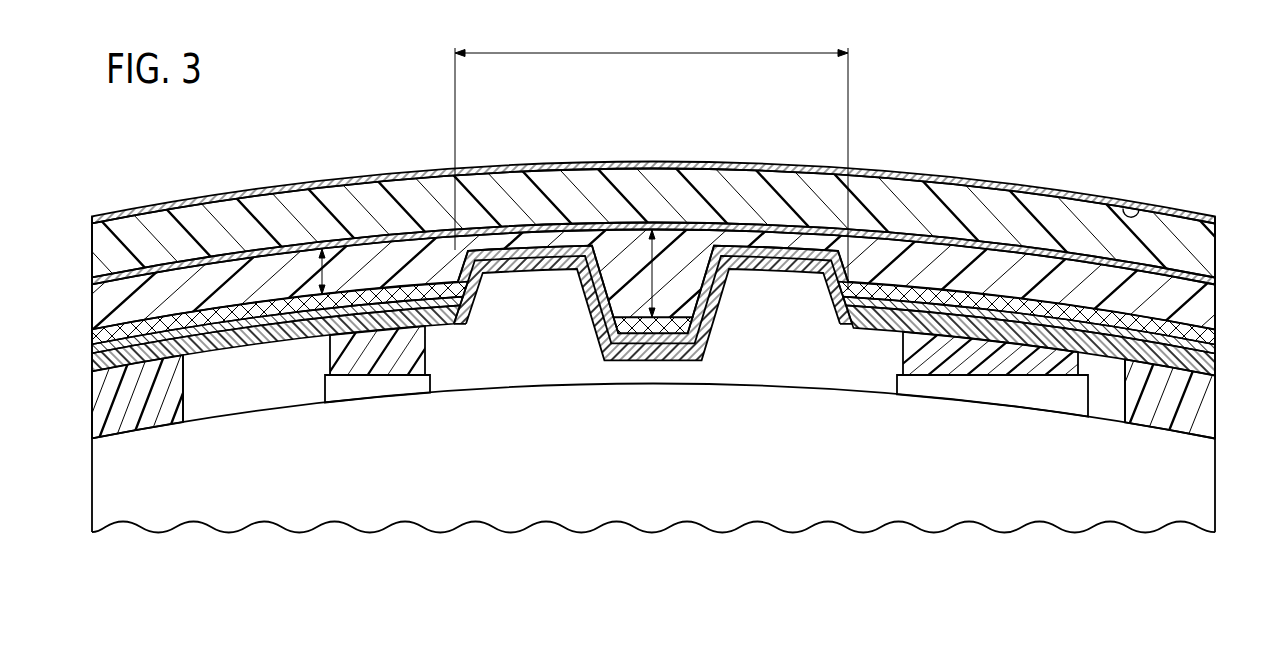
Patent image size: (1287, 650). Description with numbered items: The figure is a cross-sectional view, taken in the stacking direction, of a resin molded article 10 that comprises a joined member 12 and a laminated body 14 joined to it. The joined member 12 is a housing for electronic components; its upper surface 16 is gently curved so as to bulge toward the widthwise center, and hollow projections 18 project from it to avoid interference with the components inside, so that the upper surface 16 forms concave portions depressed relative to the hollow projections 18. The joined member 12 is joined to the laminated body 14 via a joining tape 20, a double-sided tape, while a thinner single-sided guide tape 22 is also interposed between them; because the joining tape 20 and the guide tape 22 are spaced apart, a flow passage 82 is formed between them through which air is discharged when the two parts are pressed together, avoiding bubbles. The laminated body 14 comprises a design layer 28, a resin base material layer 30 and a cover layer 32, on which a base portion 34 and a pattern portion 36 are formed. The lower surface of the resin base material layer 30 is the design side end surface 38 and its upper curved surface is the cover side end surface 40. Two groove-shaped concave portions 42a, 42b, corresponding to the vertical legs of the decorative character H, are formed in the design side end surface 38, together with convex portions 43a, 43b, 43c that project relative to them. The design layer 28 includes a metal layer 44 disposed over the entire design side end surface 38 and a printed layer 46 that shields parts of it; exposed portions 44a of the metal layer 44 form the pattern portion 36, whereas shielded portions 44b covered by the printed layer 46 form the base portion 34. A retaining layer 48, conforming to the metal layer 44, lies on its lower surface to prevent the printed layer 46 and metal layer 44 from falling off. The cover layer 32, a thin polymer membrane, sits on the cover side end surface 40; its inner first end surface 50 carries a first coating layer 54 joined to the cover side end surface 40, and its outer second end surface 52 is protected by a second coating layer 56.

The resin molded article 10 is at (340, 91).
The joined member 12 is at (777, 408).
The laminated body 14 is at (1181, 198).
The upper surface 16 is at (570, 383).
The hollow projections 18 is at (342, 390).
The joining tape 20 is at (100, 404).
The guide tape 22 is at (418, 351).
The design layer 28 is at (255, 466).
The resin base material layer 30 is at (100, 299).
The cover layer 32 is at (100, 241).
The base portion 34 is at (246, 176).
The pattern portion 36 is at (620, 150).
The design side end surface 38 is at (930, 290).
The cover side end surface 40 is at (997, 247).
The concave portion 42a is at (530, 259).
The concave portion 42b is at (772, 259).
The convex portion 43a is at (261, 308).
The convex portion 43b is at (665, 321).
The convex portion 43c is at (1058, 309).
The metal layer 44 is at (219, 336).
The exposed portions 44a is at (558, 247).
The shielded portions 44b is at (633, 338).
The printed layer 46 is at (184, 318).
The retaining layer 48 is at (611, 352).
The first end surface 50 is at (1148, 263).
The second end surface 52 is at (1125, 206).
The first coating layer 54 is at (188, 262).
The second coating layer 56 is at (152, 216).
The flow passage 82 is at (300, 392).